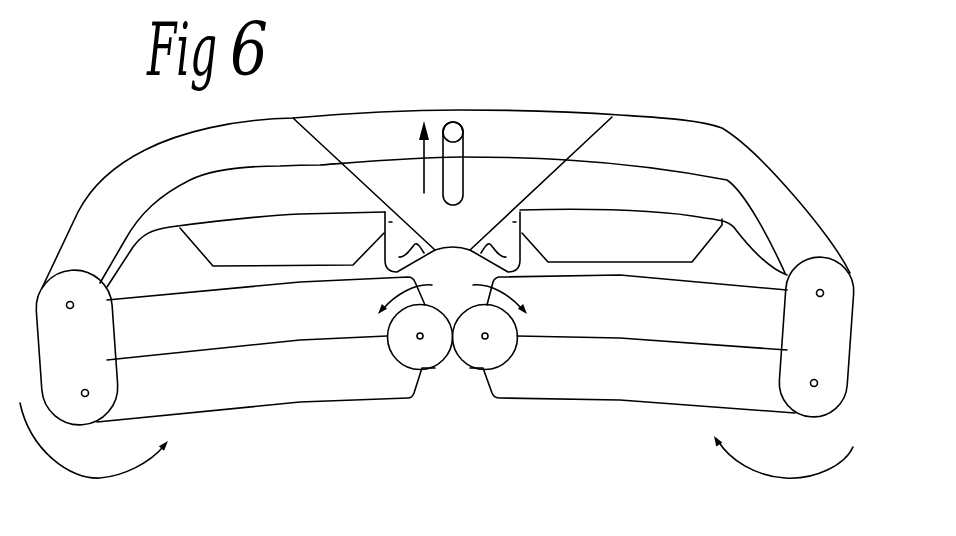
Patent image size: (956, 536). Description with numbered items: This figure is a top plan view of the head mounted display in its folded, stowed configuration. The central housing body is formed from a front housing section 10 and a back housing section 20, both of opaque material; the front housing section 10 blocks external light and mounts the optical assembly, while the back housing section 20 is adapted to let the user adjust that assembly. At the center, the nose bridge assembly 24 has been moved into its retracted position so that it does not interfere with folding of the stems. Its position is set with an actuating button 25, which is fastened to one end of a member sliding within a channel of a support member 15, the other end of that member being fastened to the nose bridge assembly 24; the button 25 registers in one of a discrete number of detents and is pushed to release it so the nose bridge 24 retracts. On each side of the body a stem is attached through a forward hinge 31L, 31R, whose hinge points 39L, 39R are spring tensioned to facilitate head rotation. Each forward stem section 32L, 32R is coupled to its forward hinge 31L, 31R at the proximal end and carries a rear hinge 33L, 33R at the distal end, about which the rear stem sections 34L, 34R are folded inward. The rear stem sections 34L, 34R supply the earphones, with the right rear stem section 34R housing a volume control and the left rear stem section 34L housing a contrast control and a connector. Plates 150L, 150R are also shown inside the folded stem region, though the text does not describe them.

The front housing section 10 is at (162, 163).
The support member 15 is at (383, 130).
The back housing section 20 is at (645, 185).
The nose bridge assembly 24 is at (421, 253).
The actuating button 25 is at (455, 124).
The left forward hinge 31L is at (90, 363).
The right forward hinge 31R is at (842, 356).
The left forward stem section 32L is at (312, 387).
The right forward stem section 32R is at (633, 385).
The left rear hinge 33L is at (432, 347).
The right rear hinge 33R is at (475, 350).
The left rear stem section 34L is at (272, 332).
The right rear stem section 34R is at (685, 327).
The left hinge point 39L is at (89, 393).
The right hinge point 39R is at (812, 387).
The left plate 150L is at (305, 257).
The right plate 150R is at (630, 252).